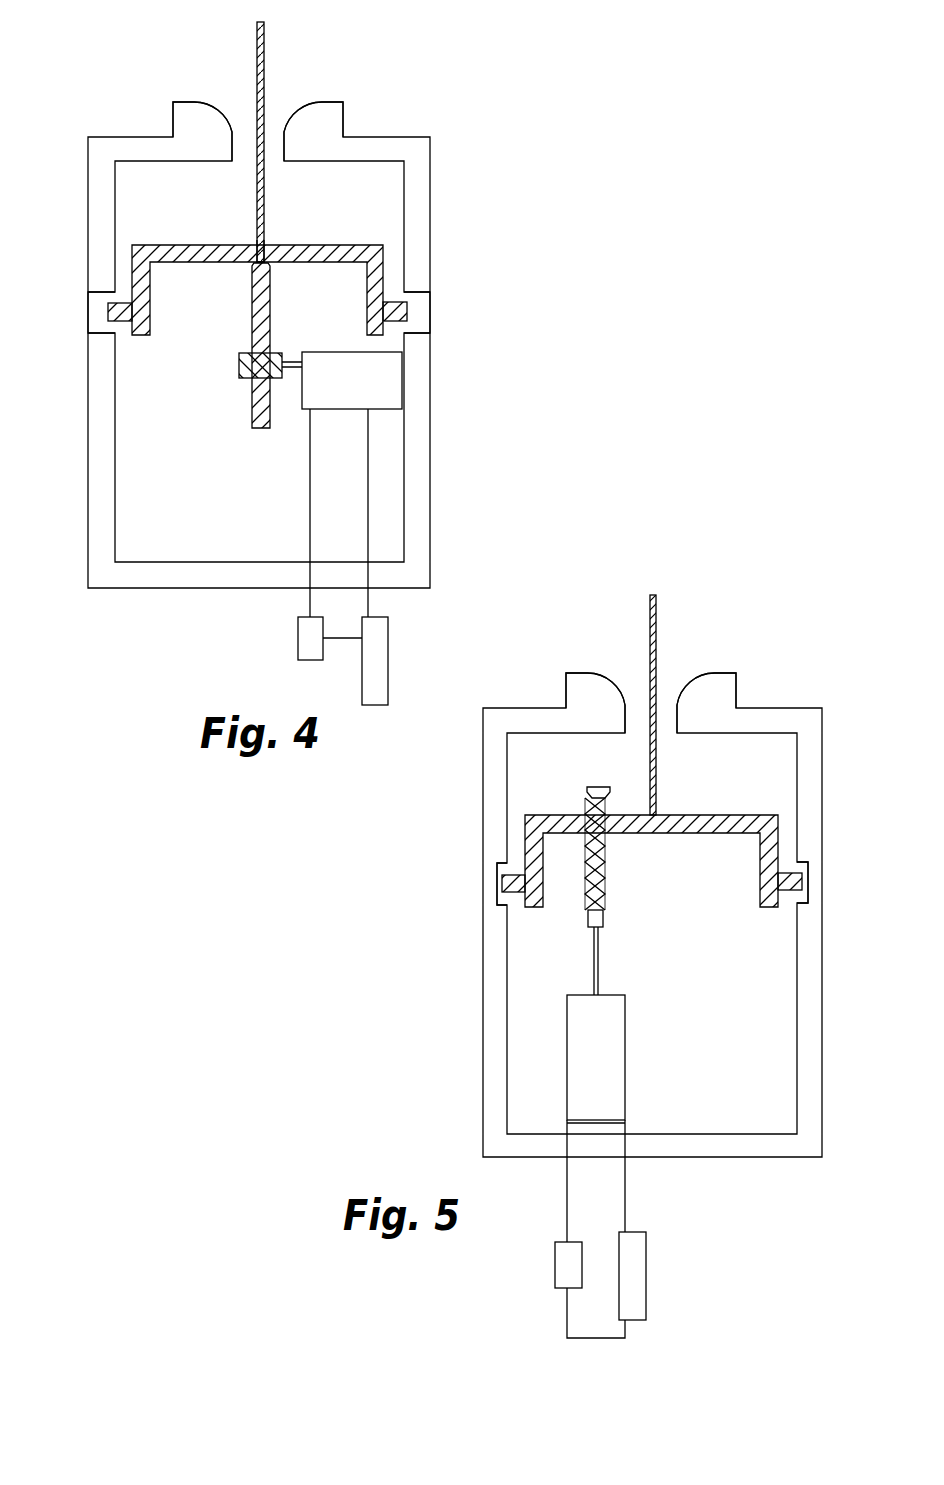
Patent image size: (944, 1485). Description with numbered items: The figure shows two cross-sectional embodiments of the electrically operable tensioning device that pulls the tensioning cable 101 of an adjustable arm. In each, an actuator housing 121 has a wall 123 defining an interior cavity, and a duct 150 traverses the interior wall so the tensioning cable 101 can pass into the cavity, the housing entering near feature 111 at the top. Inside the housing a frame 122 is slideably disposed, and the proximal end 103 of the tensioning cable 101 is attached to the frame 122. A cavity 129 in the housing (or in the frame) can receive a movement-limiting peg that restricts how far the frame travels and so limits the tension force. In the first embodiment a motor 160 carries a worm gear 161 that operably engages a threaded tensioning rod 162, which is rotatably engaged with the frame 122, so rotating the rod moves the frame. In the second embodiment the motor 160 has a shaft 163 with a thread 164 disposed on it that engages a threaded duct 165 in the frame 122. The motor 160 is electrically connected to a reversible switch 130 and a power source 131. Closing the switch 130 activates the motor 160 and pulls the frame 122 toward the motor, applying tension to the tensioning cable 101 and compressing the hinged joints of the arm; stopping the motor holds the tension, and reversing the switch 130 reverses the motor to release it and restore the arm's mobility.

In FIG. 4, the tensioning cable 101 is at (265, 37).
In FIG. 5, the tensioning cable 101 is at (657, 610).
In FIG. 4, the proximal end of the tensioning cable 103 is at (264, 240).
In FIG. 4, the housing top opening edge 111 is at (308, 115).
In FIG. 5, the housing top opening edge 111 is at (702, 685).
In FIG. 4, the actuator housing 121 is at (400, 136).
In FIG. 5, the actuator housing 121 is at (793, 705).
In FIG. 4, the frame 122 is at (384, 260).
In FIG. 5, the frame 122 is at (775, 830).
In FIG. 4, the wall 123 is at (400, 310).
In FIG. 5, the wall 123 is at (798, 880).
In FIG. 4, the cavity 129 is at (410, 323).
In FIG. 5, the cavity 129 is at (803, 897).
In FIG. 4, the reversible switch 130 is at (306, 628).
In FIG. 5, the reversible switch 130 is at (555, 1268).
In FIG. 4, the power source 131 is at (377, 672).
In FIG. 5, the power source 131 is at (645, 1258).
In FIG. 4, the duct 150 is at (242, 143).
In FIG. 5, the duct 150 is at (635, 715).
In FIG. 4, the motor 160 is at (375, 378).
In FIG. 5, the motor 160 is at (575, 1062).
In FIG. 4, the worm gear 161 is at (240, 363).
In FIG. 4, the threaded tensioning rod 162 is at (257, 398).
In FIG. 5, the shaft 163 is at (592, 955).
In FIG. 5, the thread 164 is at (583, 897).
In FIG. 5, the threaded duct 165 is at (563, 814).